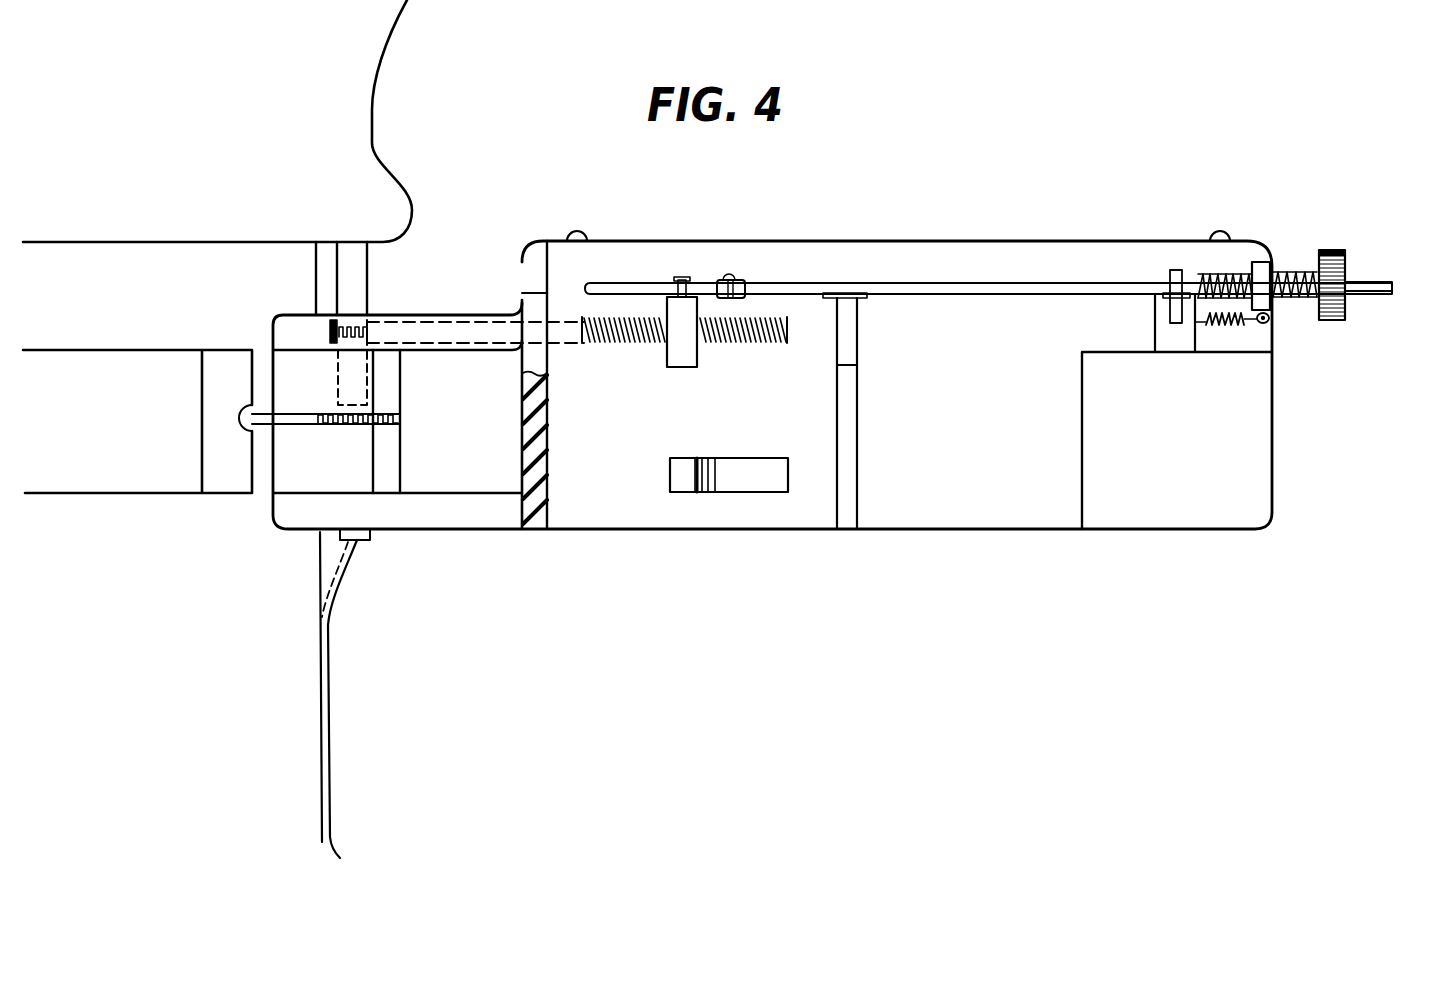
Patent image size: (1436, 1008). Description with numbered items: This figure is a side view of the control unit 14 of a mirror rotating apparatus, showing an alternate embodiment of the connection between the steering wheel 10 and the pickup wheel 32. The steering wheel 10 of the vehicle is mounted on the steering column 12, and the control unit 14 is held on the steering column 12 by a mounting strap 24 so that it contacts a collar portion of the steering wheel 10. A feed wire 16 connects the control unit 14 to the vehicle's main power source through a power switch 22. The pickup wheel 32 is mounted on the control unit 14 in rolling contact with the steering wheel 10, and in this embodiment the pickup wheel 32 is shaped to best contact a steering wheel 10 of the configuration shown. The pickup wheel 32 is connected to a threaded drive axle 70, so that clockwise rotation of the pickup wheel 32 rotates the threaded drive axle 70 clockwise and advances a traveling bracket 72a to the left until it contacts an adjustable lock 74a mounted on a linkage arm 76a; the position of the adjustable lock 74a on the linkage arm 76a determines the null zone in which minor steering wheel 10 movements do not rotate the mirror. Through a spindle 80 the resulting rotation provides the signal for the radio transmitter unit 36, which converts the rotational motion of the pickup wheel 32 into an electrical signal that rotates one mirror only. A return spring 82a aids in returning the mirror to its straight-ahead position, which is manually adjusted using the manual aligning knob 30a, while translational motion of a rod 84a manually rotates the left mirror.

The steering wheel 10 is at (362, 78).
The steering column 12 is at (315, 592).
The control unit 14 is at (913, 240).
The feed wire 16 is at (330, 665).
The power switch 22 is at (713, 484).
The mounting strap 24 is at (154, 483).
The manual aligning knob 30a is at (1320, 262).
The pickup wheel 32 is at (365, 285).
The radio transmitter unit 36 is at (1185, 498).
The threaded drive axle 70 is at (605, 330).
The traveling bracket 72a is at (690, 360).
The adjustable lock 74a is at (735, 280).
The linkage arm 76a is at (970, 296).
The spindle 80 is at (1155, 314).
The return spring 82a is at (1240, 323).
The rod 84a is at (1373, 282).